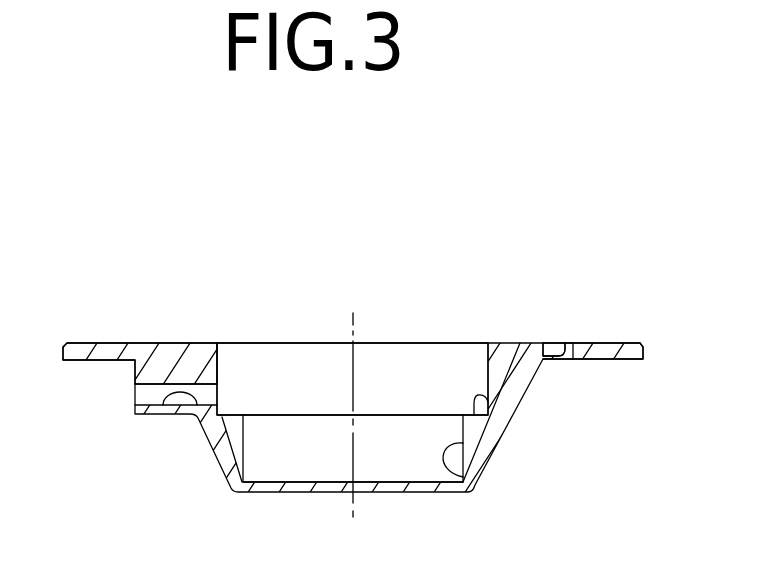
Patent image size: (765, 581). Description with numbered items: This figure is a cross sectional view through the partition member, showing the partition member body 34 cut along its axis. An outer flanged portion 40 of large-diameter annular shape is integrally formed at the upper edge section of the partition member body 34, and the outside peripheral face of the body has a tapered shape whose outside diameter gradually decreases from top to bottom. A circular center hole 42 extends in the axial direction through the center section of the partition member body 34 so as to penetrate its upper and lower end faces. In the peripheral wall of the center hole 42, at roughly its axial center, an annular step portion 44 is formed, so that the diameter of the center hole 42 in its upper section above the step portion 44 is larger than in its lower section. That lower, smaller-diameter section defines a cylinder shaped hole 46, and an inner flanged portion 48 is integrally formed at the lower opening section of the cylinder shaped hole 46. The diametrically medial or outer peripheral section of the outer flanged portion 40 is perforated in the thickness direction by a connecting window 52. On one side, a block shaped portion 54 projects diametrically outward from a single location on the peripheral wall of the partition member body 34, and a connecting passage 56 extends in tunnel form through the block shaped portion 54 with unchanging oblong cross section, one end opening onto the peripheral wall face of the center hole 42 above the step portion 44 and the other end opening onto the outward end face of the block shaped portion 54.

The partition member body 34 is at (130, 282).
The outer flanged portion 40 is at (615, 345).
The center hole 42 is at (246, 385).
The step portion 44 is at (486, 402).
The cylinder shaped hole 46 is at (477, 478).
The inner flanged portion 48 is at (255, 490).
The connecting window 52 is at (563, 343).
The block shaped portion 54 is at (165, 363).
The connecting passage 56 is at (167, 397).